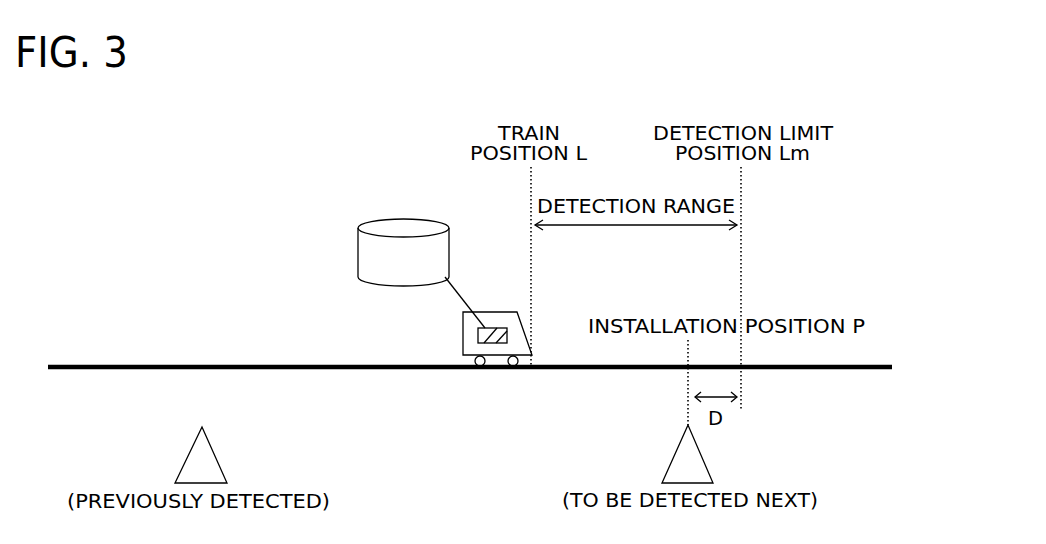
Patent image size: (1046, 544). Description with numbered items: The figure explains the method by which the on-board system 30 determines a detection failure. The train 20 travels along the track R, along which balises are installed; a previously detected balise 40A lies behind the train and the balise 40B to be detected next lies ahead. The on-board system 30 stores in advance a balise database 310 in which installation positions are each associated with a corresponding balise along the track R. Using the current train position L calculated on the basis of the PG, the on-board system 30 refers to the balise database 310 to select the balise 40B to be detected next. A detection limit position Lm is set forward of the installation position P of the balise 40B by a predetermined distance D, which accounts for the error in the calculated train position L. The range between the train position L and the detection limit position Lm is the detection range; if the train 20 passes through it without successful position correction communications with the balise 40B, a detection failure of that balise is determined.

The track R is at (140, 365).
The balise database 310 is at (373, 227).
The train 20 is at (499, 352).
The on-board system 30 is at (495, 328).
The balise 40A is at (215, 453).
The balise to be detected next 40B is at (672, 457).